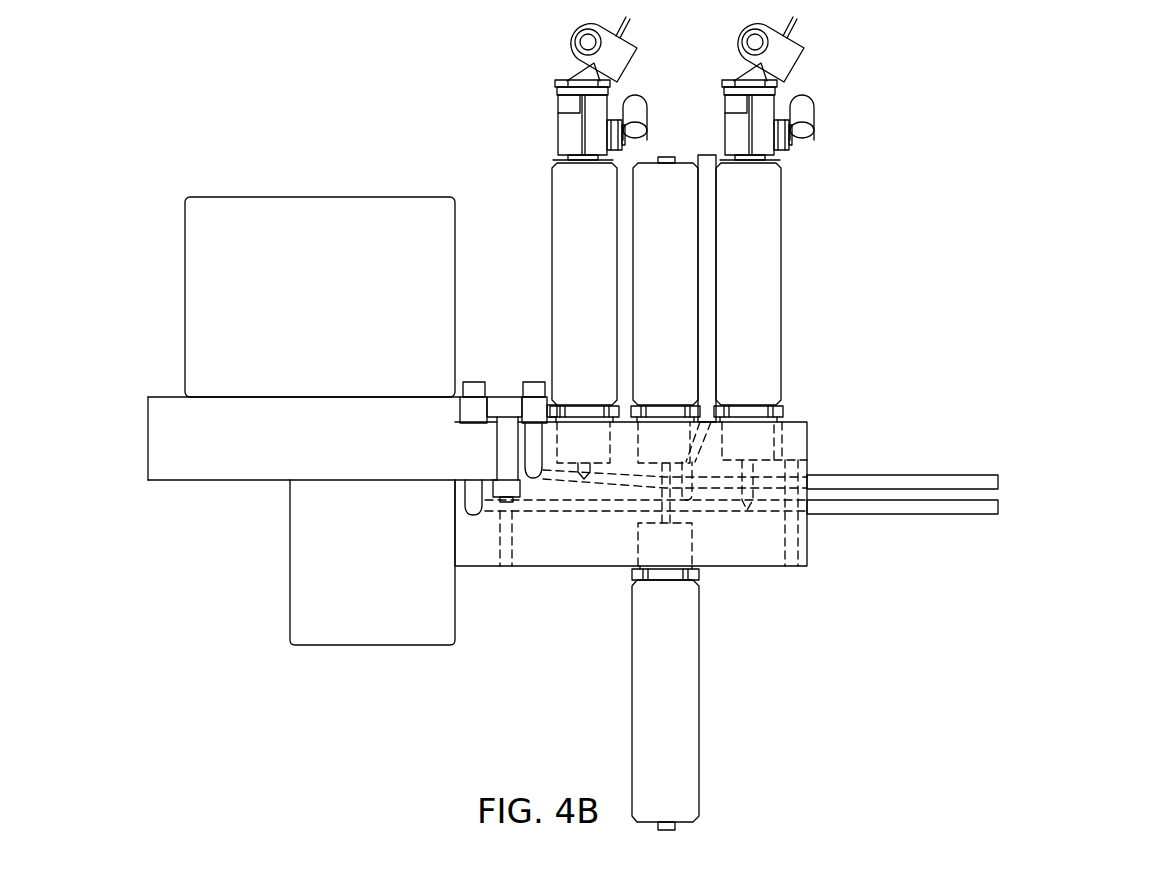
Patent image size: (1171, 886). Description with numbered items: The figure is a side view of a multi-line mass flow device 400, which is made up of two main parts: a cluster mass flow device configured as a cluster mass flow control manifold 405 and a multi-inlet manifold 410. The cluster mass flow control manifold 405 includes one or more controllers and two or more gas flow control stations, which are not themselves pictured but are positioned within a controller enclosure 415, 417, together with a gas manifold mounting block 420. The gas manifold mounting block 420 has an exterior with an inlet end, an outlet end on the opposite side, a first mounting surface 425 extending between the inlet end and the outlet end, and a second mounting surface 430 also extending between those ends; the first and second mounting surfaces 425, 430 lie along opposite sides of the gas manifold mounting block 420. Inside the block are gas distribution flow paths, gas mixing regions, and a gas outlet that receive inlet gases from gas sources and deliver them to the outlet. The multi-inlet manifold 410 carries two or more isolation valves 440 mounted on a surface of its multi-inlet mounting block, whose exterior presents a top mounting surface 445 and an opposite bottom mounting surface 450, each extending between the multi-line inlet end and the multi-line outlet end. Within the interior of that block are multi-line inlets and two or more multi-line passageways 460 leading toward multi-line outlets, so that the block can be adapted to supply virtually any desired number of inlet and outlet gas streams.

The multi-line mass flow device 400 is at (614, 423).
The cluster mass flow control manifold 405 is at (287, 381).
The multi-inlet manifold 410 is at (726, 423).
The controller enclosure 415 is at (397, 197).
The controller enclosure 417 is at (290, 583).
The gas manifold mounting block 420 is at (148, 437).
The first mounting surface 425 is at (167, 397).
The second mounting surface 430 is at (222, 482).
The isolation valves 440 is at (782, 203).
The top mounting surface 445 is at (798, 421).
The bottom mounting surface 450 is at (757, 567).
The multi-line passageways 460 is at (583, 513).